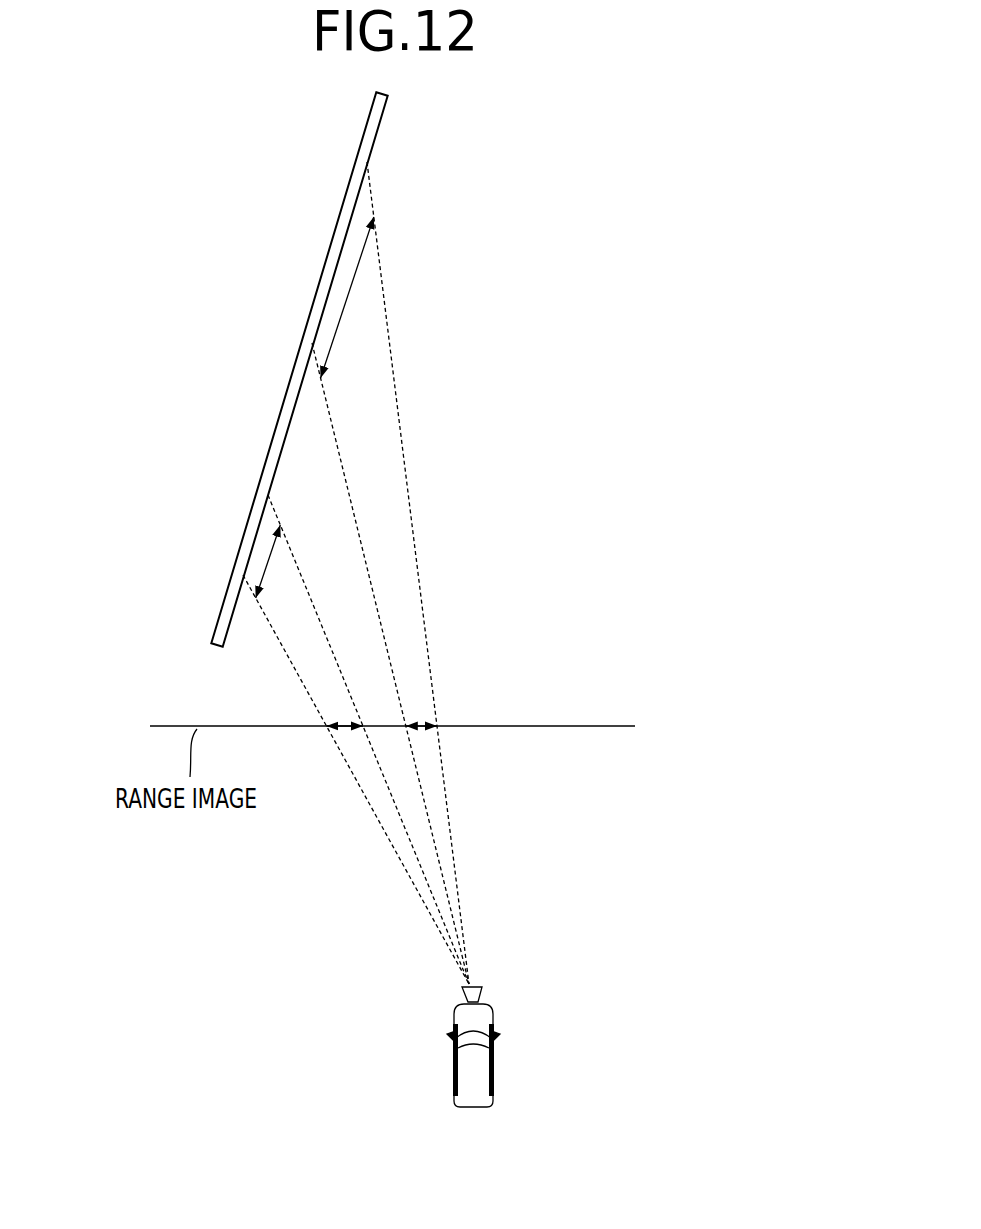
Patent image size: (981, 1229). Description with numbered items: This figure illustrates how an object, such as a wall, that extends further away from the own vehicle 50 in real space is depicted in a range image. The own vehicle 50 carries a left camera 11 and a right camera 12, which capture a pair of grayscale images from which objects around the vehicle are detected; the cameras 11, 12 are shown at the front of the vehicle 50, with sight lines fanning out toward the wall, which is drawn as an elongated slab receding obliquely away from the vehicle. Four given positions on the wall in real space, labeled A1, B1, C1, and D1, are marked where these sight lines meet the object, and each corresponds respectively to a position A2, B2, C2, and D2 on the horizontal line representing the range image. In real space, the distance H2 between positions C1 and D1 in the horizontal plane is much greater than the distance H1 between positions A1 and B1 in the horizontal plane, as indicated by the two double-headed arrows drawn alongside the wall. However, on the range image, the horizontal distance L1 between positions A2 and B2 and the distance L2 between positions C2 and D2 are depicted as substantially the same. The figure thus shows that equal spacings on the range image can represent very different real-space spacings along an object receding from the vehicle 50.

The left camera 11 is at (530, 982).
The right camera 12 is at (474, 984).
The own vehicle 50 is at (522, 1034).
The position A1 is at (243, 575).
The position B1 is at (268, 495).
The position C1 is at (312, 343).
The position D1 is at (367, 161).
The position A2 is at (326, 730).
The position B2 is at (363, 730).
The position C2 is at (406, 730).
The position D2 is at (437, 725).
The distance H1 is at (270, 570).
The distance H2 is at (348, 300).
The horizontal distance L1 is at (350, 723).
The distance L2 is at (422, 723).